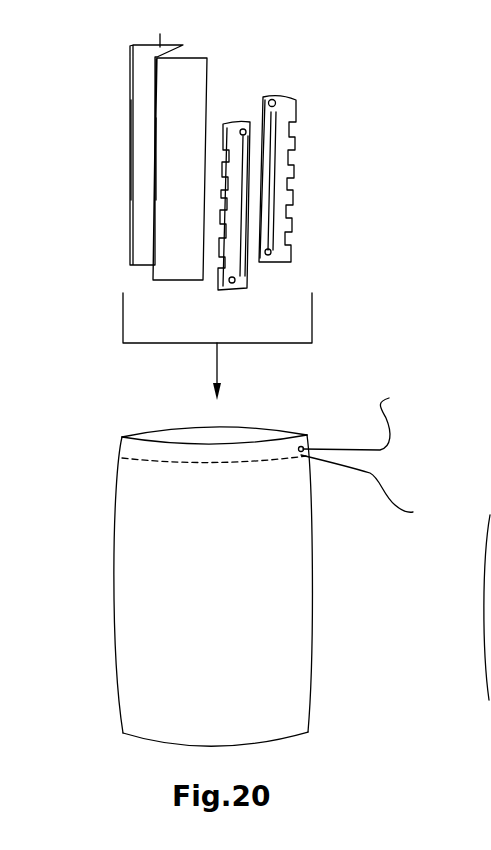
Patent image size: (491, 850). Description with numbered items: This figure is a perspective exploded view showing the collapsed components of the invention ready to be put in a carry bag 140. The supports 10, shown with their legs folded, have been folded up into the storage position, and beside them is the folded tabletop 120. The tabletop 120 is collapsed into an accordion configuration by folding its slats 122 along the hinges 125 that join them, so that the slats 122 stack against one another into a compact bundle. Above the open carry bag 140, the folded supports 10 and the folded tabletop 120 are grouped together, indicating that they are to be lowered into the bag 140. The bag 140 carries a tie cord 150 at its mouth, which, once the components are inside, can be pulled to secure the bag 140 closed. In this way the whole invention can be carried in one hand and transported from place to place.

The supports 10 is at (330, 109).
The tabletop 120 is at (223, 145).
The slats 122 is at (158, 49).
The hinges 125 is at (157, 118).
The carry bag 140 is at (78, 487).
The tie cord 150 is at (390, 425).